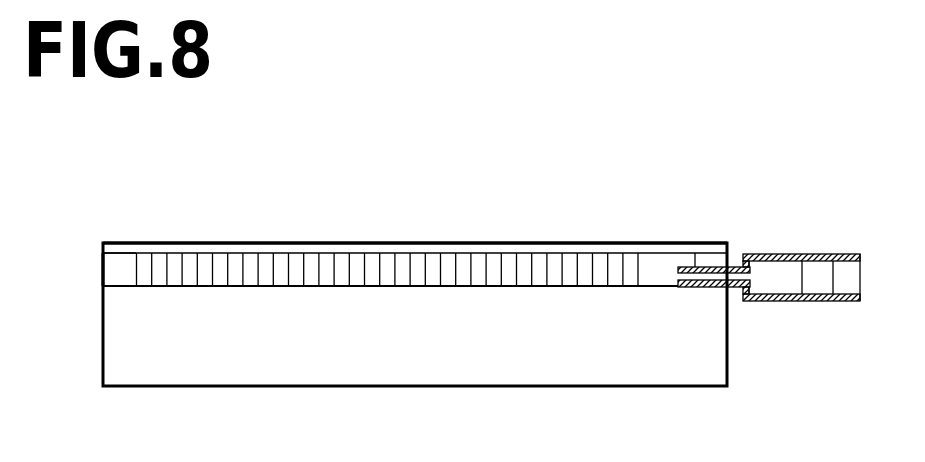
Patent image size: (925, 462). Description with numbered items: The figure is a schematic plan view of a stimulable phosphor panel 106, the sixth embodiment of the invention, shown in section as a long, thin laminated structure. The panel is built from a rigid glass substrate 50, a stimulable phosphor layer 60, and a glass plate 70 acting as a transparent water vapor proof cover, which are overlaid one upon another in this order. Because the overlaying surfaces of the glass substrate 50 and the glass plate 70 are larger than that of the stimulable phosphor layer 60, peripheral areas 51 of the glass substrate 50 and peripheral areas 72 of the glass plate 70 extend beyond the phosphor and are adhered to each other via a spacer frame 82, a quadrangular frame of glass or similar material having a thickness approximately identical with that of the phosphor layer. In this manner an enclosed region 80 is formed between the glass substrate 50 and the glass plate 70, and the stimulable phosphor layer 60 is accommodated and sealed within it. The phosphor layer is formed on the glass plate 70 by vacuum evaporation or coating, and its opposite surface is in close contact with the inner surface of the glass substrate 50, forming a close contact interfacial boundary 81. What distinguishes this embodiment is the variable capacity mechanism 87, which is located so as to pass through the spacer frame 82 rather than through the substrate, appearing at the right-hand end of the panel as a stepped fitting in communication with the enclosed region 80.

The glass substrate 50 is at (710, 355).
The peripheral area 51 is at (137, 276).
The stimulable phosphor layer 60 is at (559, 272).
The glass plate 70 is at (483, 252).
The peripheral area 72 is at (128, 260).
The enclosed region 80 is at (658, 273).
The close contact interfacial boundary 81 is at (365, 280).
The spacer frame 82 is at (110, 280).
The variable capacity mechanism 87 is at (838, 254).
The stimulable phosphor panel 106 is at (565, 163).